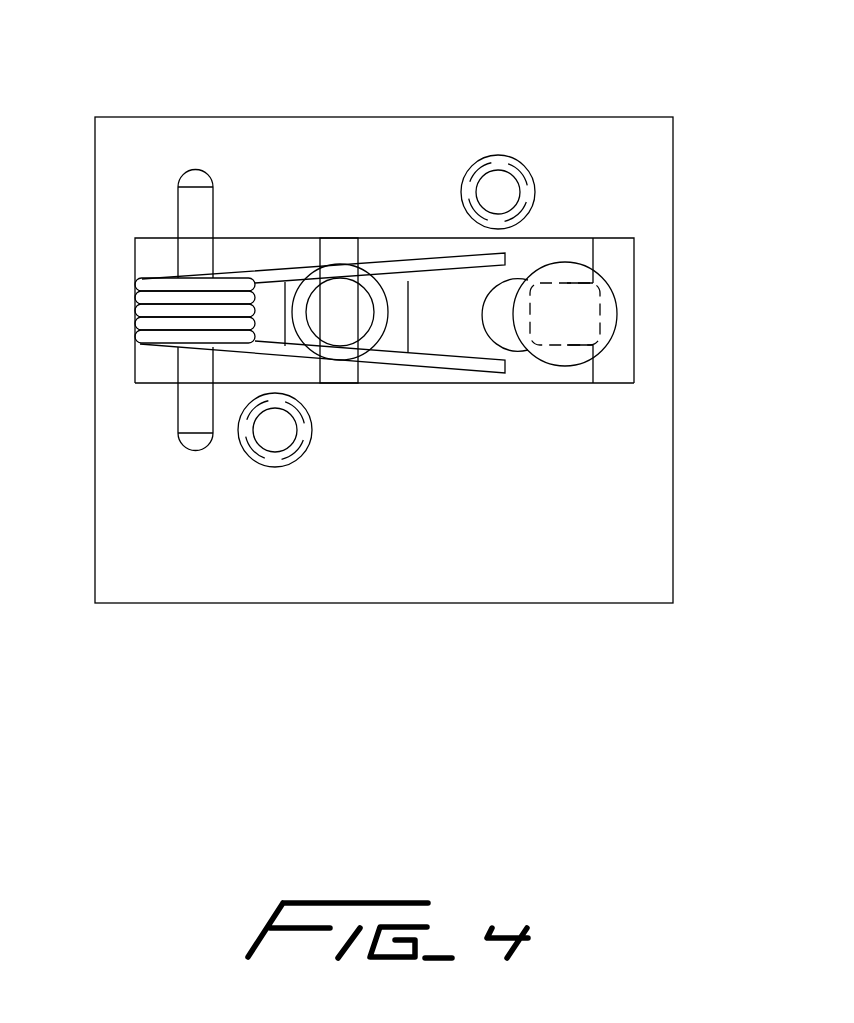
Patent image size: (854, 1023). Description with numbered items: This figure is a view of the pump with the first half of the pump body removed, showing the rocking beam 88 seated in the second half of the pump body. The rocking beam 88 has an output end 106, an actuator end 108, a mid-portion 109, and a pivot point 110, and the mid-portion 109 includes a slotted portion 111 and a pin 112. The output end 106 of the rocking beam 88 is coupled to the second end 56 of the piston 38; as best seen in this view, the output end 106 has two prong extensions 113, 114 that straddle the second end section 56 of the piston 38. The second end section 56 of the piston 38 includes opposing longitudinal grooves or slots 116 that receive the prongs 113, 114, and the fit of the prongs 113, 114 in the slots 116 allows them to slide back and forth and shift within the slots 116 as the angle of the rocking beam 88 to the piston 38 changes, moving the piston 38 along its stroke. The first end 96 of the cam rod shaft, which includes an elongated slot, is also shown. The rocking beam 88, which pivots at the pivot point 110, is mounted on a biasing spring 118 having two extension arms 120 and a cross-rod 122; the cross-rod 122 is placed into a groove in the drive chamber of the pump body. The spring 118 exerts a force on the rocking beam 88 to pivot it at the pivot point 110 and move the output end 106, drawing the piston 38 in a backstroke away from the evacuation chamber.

The piston 38 is at (667, 310).
The second end of the piston 56 is at (608, 297).
The rocking beam 88 is at (287, 240).
The first end of the shaft 96 is at (306, 286).
The output end 106 is at (592, 261).
The actuator end 108 is at (157, 362).
The mid-portion 109 is at (395, 375).
The pivot point 110 is at (190, 383).
The slotted portion 111 is at (399, 293).
The pin 112 is at (336, 326).
The prong extension 113 is at (538, 377).
The prong extension 114 is at (530, 247).
The slots 116 is at (567, 283).
The spring 118 is at (247, 370).
The extension arms 120 is at (445, 262).
The cross-rod 122 is at (193, 222).